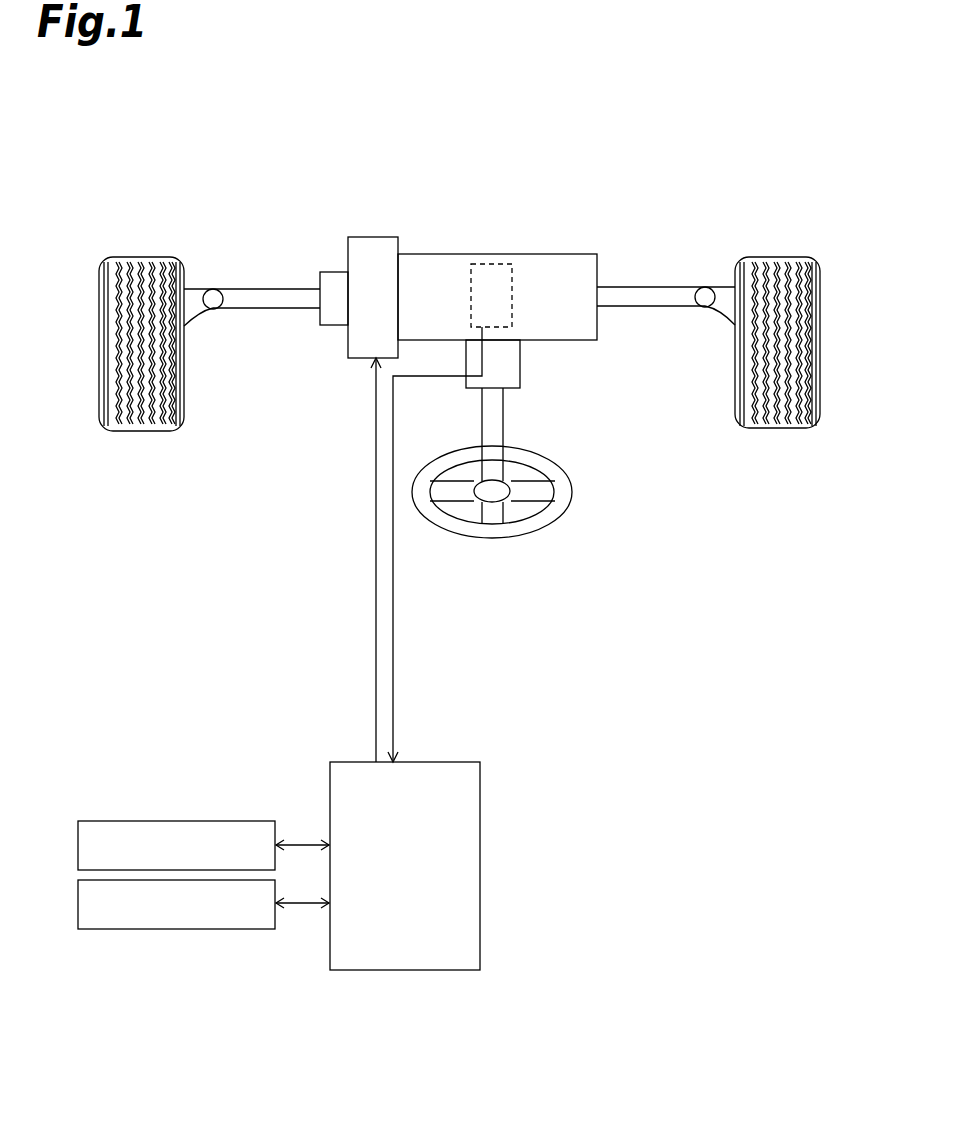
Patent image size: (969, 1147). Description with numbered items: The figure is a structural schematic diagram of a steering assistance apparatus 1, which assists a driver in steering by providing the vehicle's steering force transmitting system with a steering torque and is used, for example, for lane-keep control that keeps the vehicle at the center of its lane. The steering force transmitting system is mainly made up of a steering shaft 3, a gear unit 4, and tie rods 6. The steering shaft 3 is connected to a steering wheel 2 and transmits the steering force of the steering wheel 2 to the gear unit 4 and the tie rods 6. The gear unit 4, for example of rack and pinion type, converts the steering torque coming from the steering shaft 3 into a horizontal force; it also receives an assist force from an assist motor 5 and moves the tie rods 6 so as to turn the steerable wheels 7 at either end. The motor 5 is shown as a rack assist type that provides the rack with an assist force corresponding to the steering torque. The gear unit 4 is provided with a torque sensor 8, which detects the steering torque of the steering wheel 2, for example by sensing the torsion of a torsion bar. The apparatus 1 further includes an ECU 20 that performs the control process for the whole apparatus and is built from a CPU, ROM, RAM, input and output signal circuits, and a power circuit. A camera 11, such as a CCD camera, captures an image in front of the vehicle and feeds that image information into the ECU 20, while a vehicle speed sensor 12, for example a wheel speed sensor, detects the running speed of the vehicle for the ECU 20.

The steering assistance apparatus 1 is at (672, 98).
The steering wheel 2 is at (538, 533).
The steering shaft 3 is at (497, 420).
The gear unit 4 is at (545, 253).
The assist motor 5 is at (375, 242).
The tie rods 6 is at (262, 297).
The steerable wheels 7 is at (100, 282).
The torque sensor 8 is at (492, 260).
The camera 11 is at (78, 840).
The vehicle speed sensor 12 is at (78, 902).
The ECU 20 is at (481, 850).